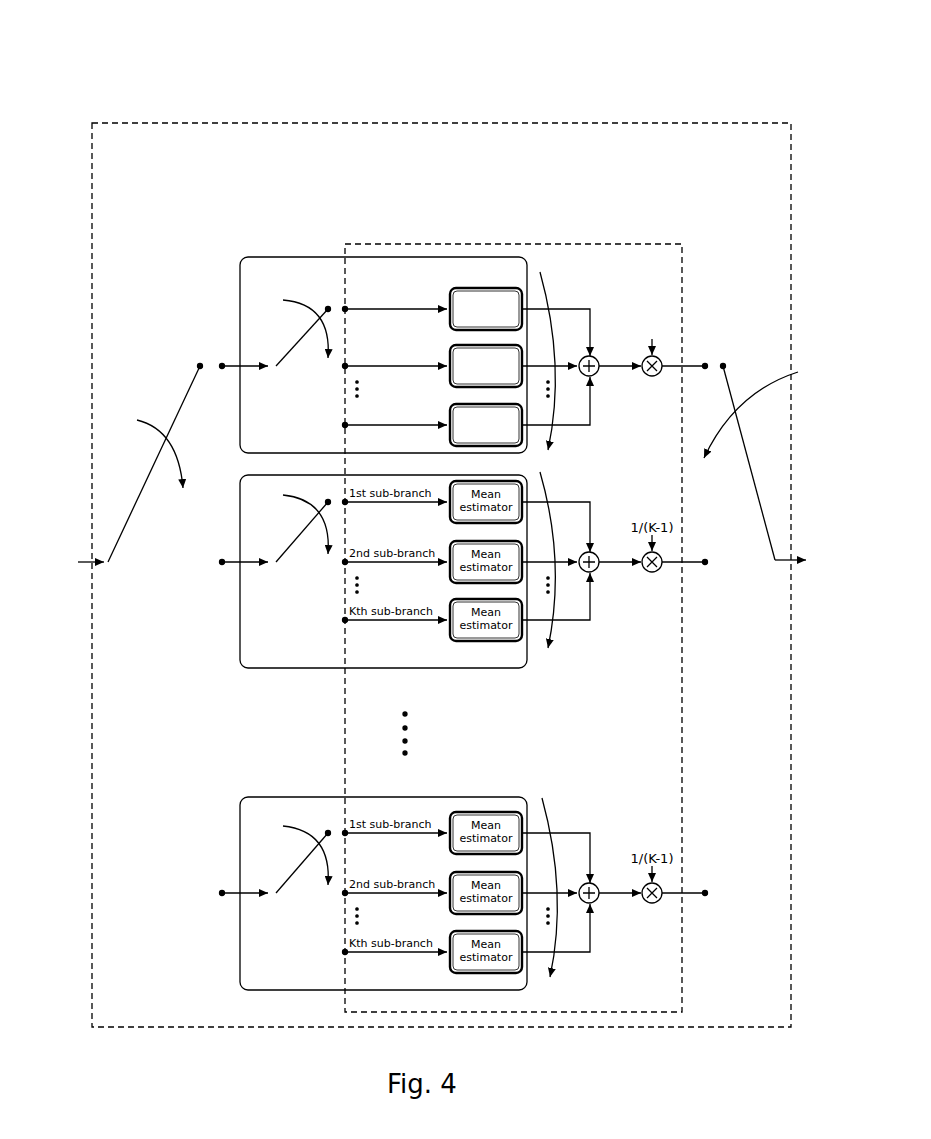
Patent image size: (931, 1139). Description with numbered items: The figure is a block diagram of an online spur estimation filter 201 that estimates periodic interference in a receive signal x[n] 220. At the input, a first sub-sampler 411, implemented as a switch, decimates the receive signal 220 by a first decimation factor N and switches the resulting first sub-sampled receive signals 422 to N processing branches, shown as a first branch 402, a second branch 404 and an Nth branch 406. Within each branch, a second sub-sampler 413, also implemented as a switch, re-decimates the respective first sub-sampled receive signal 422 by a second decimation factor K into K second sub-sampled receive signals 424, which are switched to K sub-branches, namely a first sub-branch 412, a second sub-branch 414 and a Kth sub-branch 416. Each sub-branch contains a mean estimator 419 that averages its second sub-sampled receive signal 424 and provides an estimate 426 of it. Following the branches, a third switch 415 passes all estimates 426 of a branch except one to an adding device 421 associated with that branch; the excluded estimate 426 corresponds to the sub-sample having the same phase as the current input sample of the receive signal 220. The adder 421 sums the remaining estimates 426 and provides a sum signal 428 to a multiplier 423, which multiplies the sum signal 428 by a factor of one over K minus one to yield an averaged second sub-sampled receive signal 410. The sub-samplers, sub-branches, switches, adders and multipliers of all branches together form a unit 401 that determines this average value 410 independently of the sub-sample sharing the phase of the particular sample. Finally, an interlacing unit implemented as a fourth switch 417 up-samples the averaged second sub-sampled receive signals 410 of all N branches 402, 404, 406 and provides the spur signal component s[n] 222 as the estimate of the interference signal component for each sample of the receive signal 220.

The spur estimation filter 201 is at (163, 118).
The averaging unit 401 is at (673, 236).
The first branch 402 is at (266, 422).
The second branch 404 is at (266, 631).
The Nth branch 406 is at (262, 956).
The averaged second sub-sampled receive signal 410 is at (707, 353).
The first sub-sampler 411 is at (152, 386).
The first sub-branch 412 is at (375, 281).
The second sub-sampler 413 is at (281, 331).
The second sub-branch 414 is at (402, 335).
The third switch 415 is at (561, 279).
The Kth sub-branch 416 is at (418, 395).
The fourth switch 417 is at (758, 353).
The mean estimator 419 is at (462, 303).
The adding device 421 is at (591, 378).
The first sub-sampled receive signal 422 is at (222, 346).
The multiplier 423 is at (652, 377).
The second sub-sampled receive signal 424 is at (346, 290).
The estimate 426 is at (536, 295).
The sum signal 428 is at (610, 355).
The receive signal x[n] 220 is at (58, 539).
The spur signal component s[n] 222 is at (835, 539).